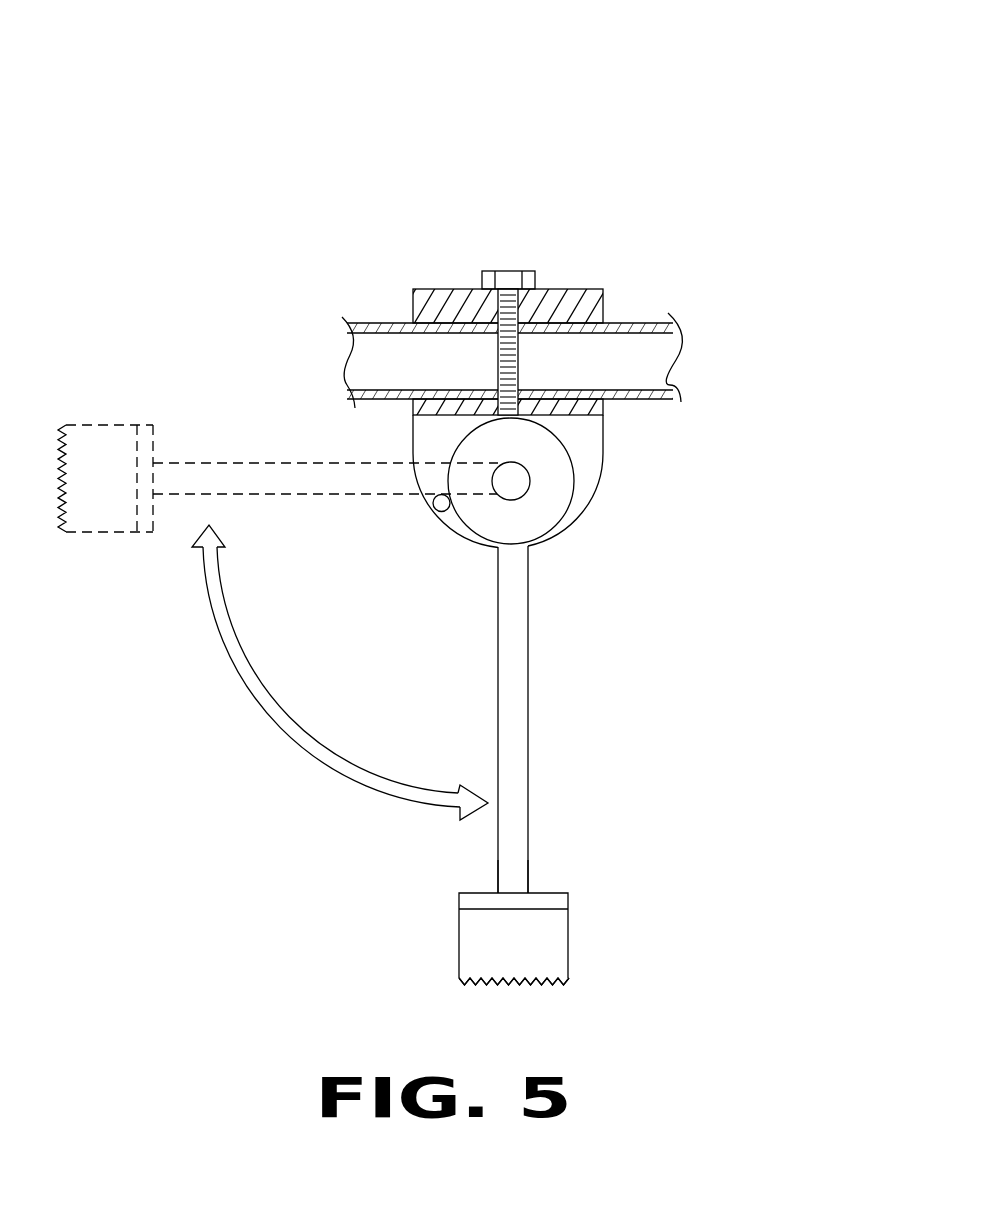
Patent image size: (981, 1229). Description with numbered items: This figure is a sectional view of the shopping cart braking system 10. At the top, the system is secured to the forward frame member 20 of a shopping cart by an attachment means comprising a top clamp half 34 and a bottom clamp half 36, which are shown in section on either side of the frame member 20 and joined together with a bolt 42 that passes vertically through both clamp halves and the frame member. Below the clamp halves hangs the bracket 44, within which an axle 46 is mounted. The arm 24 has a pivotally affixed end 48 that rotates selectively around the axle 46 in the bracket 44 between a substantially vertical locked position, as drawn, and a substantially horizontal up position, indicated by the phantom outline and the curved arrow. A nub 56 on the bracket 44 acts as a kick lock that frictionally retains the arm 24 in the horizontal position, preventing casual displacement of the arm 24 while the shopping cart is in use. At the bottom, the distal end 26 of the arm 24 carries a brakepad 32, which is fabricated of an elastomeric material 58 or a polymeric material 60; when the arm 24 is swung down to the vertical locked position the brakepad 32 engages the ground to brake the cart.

The shopping cart braking system 10 is at (720, 110).
The forward frame member of shopping cart 20 is at (672, 352).
The arm 24 is at (530, 785).
The distal end of arm 26 is at (498, 887).
The brakepad 32 is at (463, 932).
The top clamp half 34 is at (440, 288).
The bottom clamp half 36 is at (410, 403).
The bolt 42 is at (512, 270).
The bracket 44 is at (603, 448).
The axle 46 is at (512, 483).
The pivotally affixed end of arm 48 is at (557, 472).
The nub 56 is at (437, 511).
The elastomeric material 58 is at (568, 940).
The polymeric material 60 is at (568, 940).